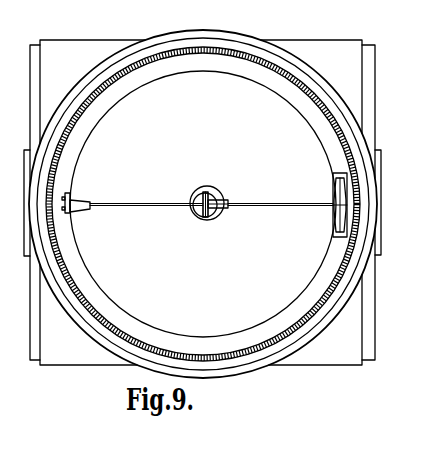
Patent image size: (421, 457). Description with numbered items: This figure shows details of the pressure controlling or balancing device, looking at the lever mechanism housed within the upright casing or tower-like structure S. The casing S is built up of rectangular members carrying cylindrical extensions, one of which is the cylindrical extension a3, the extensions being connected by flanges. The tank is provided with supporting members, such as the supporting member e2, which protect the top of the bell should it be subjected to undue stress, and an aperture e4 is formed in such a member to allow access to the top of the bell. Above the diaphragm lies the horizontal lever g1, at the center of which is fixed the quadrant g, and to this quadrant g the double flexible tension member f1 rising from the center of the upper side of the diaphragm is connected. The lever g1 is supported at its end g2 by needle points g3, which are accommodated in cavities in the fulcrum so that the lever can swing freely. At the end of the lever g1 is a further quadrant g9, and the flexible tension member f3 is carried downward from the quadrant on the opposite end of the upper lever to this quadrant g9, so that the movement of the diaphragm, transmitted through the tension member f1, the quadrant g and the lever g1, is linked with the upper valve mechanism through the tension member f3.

The casing S is at (203, 191).
The cylindrical extension a3 is at (290, 72).
The supporting member e2 is at (117, 293).
The quadrant g9 is at (72, 198).
The flexible tension member f3 is at (71, 206).
The horizontal lever g1 is at (152, 202).
The double flexible tension member f1 is at (190, 210).
The aperture e4 is at (207, 187).
The quadrant g is at (228, 201).
The lever end g2 is at (255, 206).
The needle points g3 is at (333, 177).